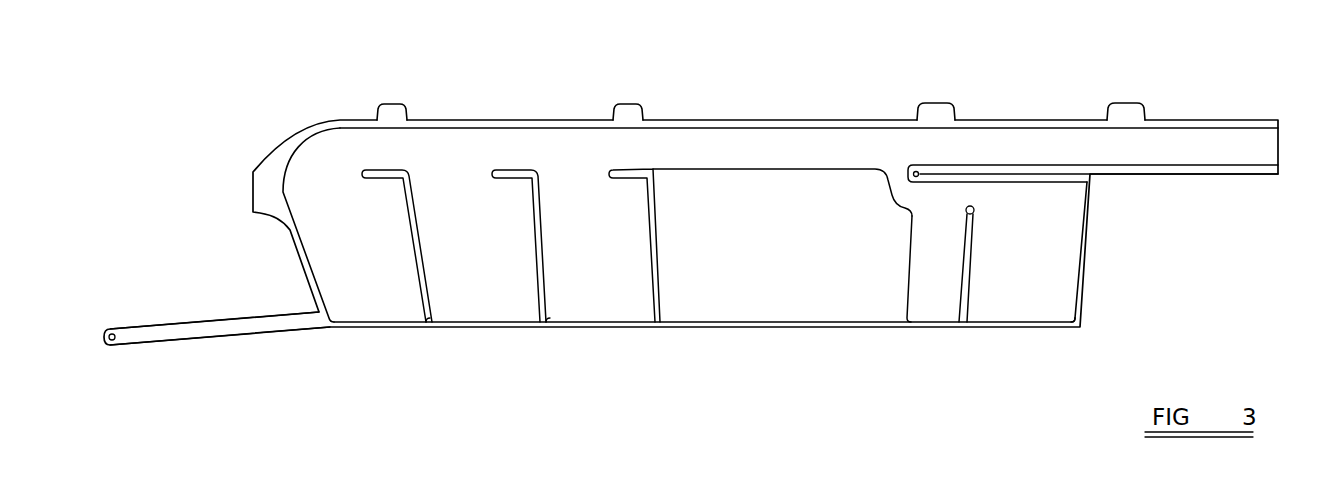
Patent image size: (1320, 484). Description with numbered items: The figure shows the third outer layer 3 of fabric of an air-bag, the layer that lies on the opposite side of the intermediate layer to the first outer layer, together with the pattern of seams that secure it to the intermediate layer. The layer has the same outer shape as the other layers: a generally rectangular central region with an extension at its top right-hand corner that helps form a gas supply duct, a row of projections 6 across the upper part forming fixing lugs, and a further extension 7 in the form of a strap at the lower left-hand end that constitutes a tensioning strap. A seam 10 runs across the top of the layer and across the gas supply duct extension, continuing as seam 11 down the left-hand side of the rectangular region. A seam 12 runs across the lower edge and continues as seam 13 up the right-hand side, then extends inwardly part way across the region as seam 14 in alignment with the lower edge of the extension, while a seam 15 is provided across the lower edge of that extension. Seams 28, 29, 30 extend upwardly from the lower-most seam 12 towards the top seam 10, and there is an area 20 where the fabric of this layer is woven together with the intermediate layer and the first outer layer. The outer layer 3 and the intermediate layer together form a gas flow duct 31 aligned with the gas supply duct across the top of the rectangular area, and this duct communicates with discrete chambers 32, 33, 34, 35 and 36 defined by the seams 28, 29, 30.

The third outer layer 3 is at (775, 302).
The projections 6 is at (1136, 108).
The further extension 7 is at (233, 325).
The seam 10 is at (853, 118).
The seam 11 is at (299, 259).
The seam 12 is at (549, 337).
The seam 13 is at (1083, 268).
The seam 14 is at (1042, 173).
The seam 15 is at (1188, 176).
The area 20 is at (738, 210).
The seam 28 is at (427, 291).
The seam 29 is at (545, 280).
The seam 30 is at (968, 294).
The gas flow duct 31 is at (667, 157).
The discrete chamber 32 is at (380, 232).
The discrete chamber 33 is at (457, 232).
The discrete chamber 34 is at (617, 232).
The discrete chamber 35 is at (960, 262).
The discrete chamber 36 is at (997, 262).